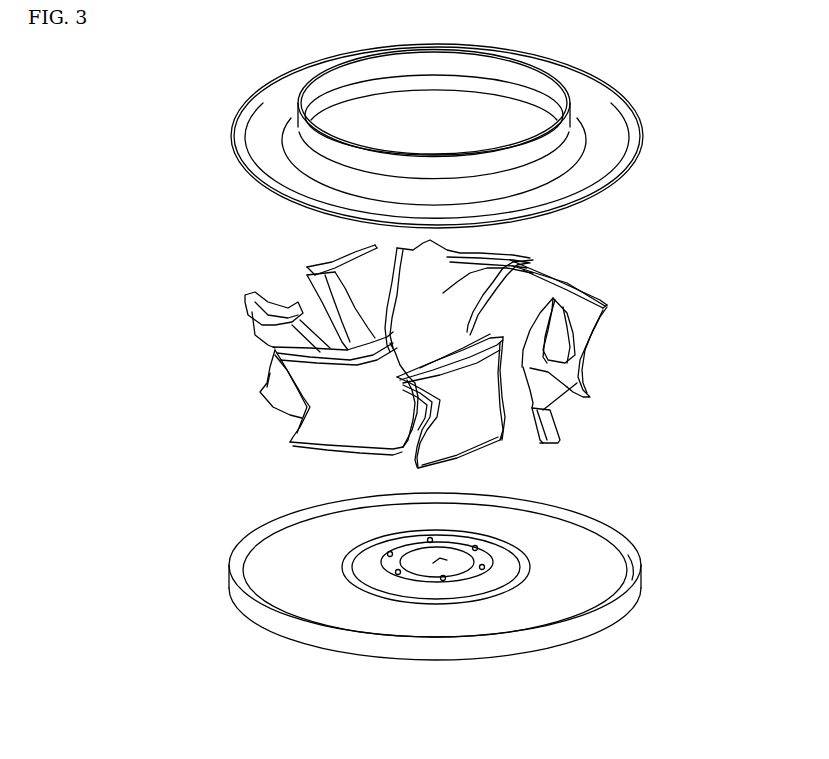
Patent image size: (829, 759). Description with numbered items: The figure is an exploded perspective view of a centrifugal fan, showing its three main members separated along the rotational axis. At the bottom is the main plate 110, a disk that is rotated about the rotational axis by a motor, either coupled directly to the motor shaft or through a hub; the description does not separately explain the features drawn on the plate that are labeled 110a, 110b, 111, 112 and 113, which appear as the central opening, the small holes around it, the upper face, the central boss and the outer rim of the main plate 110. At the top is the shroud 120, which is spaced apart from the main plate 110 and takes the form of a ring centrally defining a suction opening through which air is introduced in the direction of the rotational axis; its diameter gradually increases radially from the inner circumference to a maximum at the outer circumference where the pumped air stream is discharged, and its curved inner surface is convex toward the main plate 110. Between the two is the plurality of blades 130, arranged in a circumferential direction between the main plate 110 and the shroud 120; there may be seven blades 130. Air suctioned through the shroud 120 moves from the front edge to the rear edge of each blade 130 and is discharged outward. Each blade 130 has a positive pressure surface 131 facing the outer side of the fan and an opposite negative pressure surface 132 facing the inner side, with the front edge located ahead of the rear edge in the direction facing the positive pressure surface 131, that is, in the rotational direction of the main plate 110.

The main plate 110 is at (415, 565).
The shaft hole 110a is at (438, 561).
The fastening holes 110b is at (391, 553).
The plate top surface 111 is at (572, 542).
The hub boss 112 is at (510, 566).
The plate rim 113 is at (633, 577).
The shroud 120 is at (270, 158).
The blades 130 is at (260, 338).
The positive pressure surface 131 is at (473, 393).
The negative pressure surface 132 is at (505, 272).